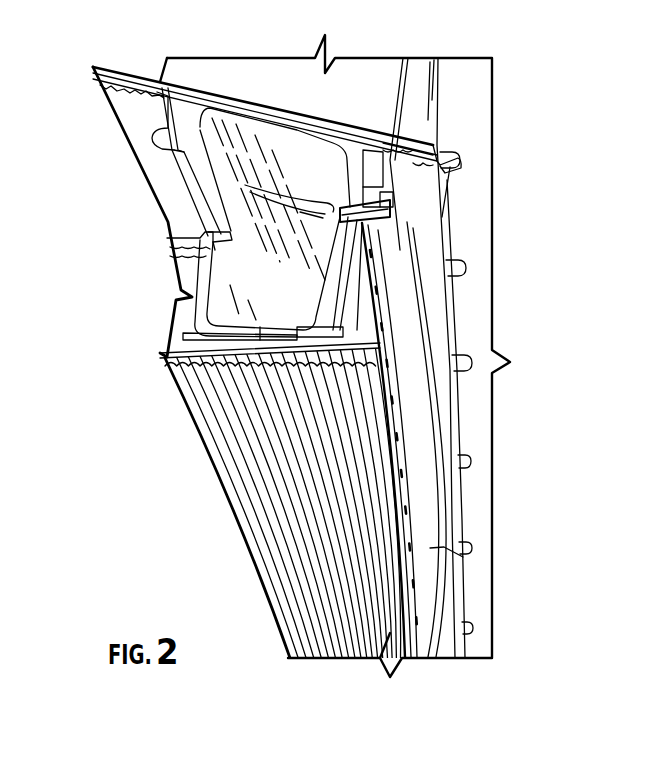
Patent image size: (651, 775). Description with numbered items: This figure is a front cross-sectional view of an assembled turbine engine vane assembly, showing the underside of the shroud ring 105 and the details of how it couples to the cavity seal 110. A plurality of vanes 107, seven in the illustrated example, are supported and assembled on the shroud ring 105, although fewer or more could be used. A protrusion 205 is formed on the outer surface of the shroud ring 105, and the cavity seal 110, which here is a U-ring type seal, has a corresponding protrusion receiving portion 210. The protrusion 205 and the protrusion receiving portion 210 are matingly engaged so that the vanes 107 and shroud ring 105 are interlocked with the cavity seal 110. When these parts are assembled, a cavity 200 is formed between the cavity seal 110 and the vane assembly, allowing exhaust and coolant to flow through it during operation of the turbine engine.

The shroud ring 105 is at (133, 118).
The vane 107 is at (440, 108).
The cavity seal 110 is at (177, 320).
The cavity 200 is at (278, 262).
The protrusion 205 is at (183, 193).
The protrusion receiving portion 210 is at (170, 237).